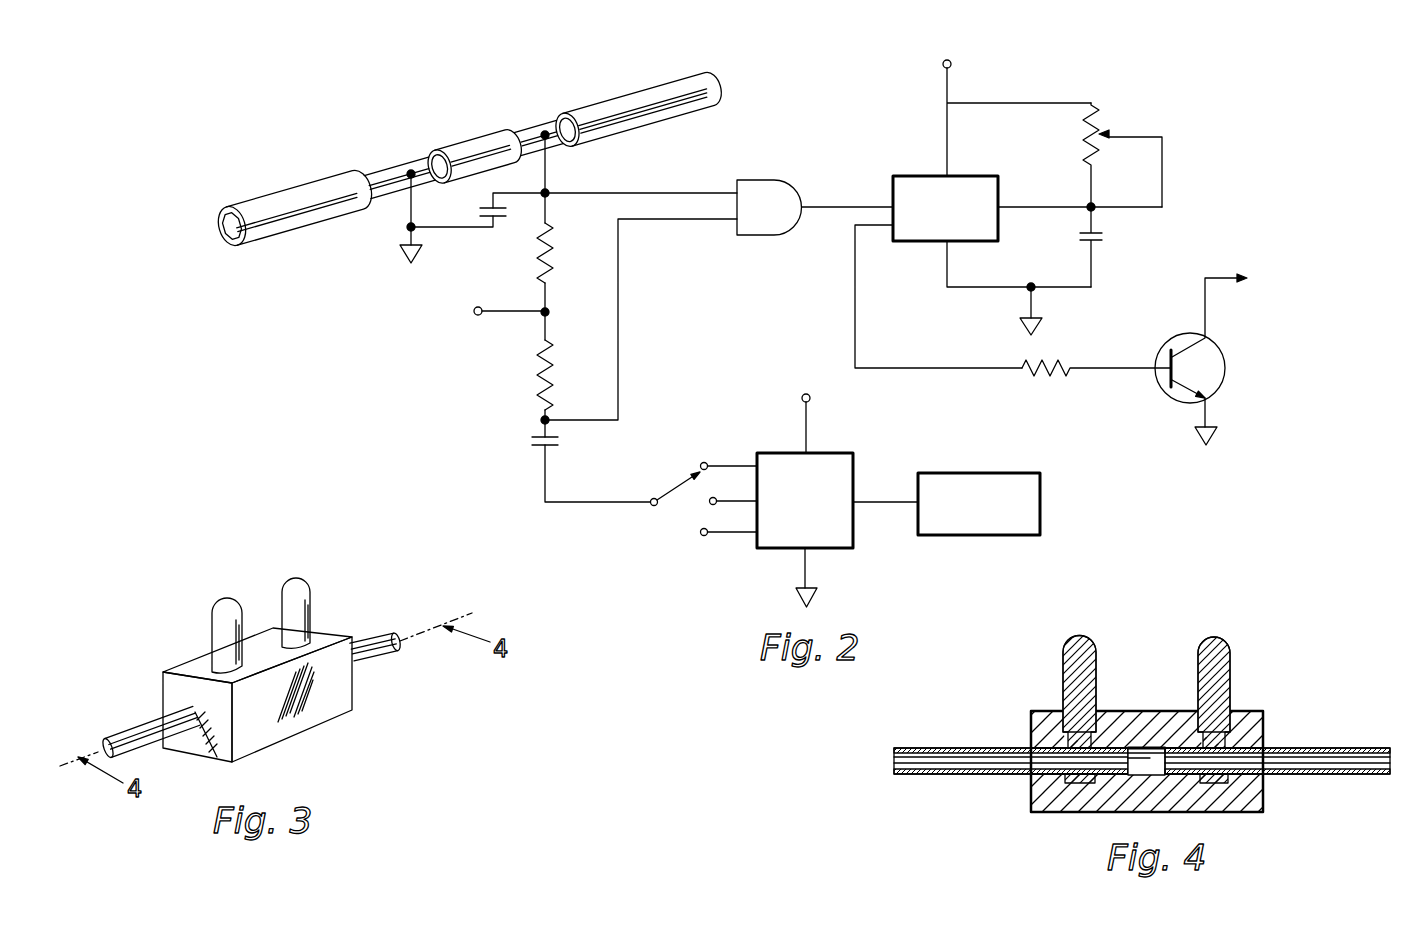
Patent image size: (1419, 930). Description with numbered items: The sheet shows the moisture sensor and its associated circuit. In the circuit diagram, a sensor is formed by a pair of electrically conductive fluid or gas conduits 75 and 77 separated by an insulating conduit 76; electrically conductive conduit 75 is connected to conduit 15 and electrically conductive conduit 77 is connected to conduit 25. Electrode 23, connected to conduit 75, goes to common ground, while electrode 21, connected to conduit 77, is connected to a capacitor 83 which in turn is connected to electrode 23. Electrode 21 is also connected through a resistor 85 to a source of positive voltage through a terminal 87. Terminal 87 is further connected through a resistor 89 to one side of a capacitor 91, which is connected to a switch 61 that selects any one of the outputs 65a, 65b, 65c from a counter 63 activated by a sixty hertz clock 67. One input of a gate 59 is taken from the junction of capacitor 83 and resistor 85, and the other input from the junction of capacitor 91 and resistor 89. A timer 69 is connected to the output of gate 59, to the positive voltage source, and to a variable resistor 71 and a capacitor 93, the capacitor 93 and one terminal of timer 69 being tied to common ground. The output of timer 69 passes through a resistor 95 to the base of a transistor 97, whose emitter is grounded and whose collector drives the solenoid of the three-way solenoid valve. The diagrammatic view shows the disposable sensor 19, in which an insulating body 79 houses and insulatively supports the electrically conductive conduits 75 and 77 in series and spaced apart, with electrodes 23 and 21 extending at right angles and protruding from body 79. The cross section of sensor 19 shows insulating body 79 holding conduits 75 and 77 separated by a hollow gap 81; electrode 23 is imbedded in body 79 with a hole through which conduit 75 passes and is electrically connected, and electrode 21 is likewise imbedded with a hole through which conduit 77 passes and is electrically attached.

In FIG. 2, the conduit 15 is at (300, 190).
In FIG. 2, the electrically conductive conduit 75 is at (385, 175).
In FIG. 3, the electrically conductive conduit 75 is at (130, 722).
In FIG. 4, the electrically conductive conduit 75 is at (972, 748).
In FIG. 2, the insulating conduit 76 is at (465, 148).
In FIG. 2, the electrically conductive conduit 77 is at (523, 137).
In FIG. 3, the electrically conductive conduit 77 is at (380, 635).
In FIG. 4, the electrically conductive conduit 77 is at (1310, 748).
In FIG. 2, the conduit 25 is at (620, 105).
In FIG. 2, the electrode 21 is at (545, 163).
In FIG. 3, the electrode 21 is at (302, 578).
In FIG. 4, the electrode 21 is at (1215, 645).
In FIG. 2, the electrode 23 is at (405, 210).
In FIG. 3, the electrode 23 is at (222, 600).
In FIG. 4, the electrode 23 is at (1085, 640).
In FIG. 2, the capacitor 83 is at (497, 222).
In FIG. 2, the resistor 85 is at (550, 253).
In FIG. 2, the terminal 87 is at (475, 317).
In FIG. 2, the resistor 89 is at (550, 362).
In FIG. 2, the capacitor 91 is at (532, 446).
In FIG. 2, the gate 59 is at (763, 178).
In FIG. 2, the switch 61 is at (690, 476).
In FIG. 2, the counter output 65a is at (730, 463).
In FIG. 2, the counter output 65b is at (727, 503).
In FIG. 2, the counter output 65c is at (727, 535).
In FIG. 2, the counter 63 is at (853, 540).
In FIG. 2, the 60 Hz clock 67 is at (980, 536).
In FIG. 2, the timer 69 is at (920, 176).
In FIG. 2, the variable resistor 71 is at (1102, 130).
In FIG. 2, the capacitor 93 is at (1105, 250).
In FIG. 2, the resistor 95 is at (1050, 378).
In FIG. 2, the transistor 97 is at (1178, 335).
In FIG. 3, the insulating body 79 is at (332, 693).
In FIG. 4, the insulating body 79 is at (1125, 712).
In FIG. 3, the sensor 19 is at (273, 641).
In FIG. 4, the sensor 19 is at (1142, 699).
In FIG. 4, the hollow gap 81 is at (1150, 760).